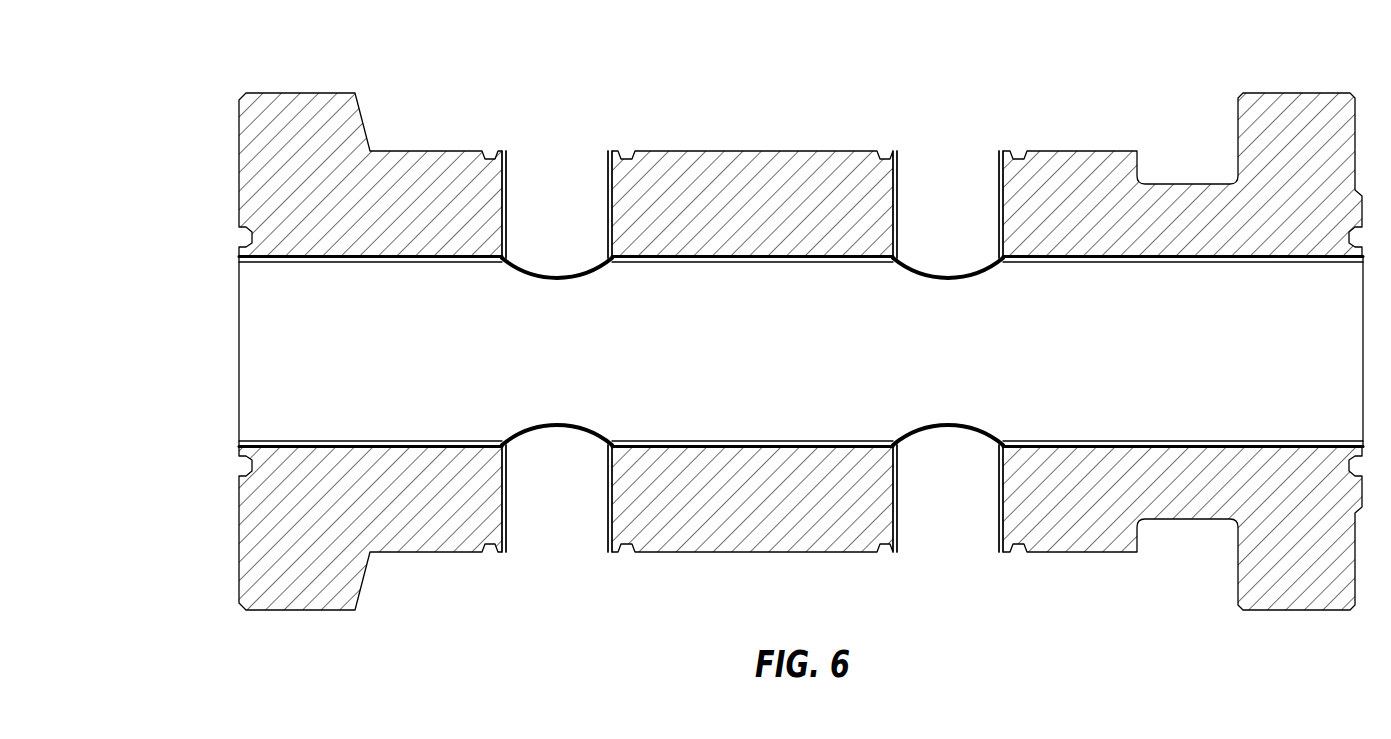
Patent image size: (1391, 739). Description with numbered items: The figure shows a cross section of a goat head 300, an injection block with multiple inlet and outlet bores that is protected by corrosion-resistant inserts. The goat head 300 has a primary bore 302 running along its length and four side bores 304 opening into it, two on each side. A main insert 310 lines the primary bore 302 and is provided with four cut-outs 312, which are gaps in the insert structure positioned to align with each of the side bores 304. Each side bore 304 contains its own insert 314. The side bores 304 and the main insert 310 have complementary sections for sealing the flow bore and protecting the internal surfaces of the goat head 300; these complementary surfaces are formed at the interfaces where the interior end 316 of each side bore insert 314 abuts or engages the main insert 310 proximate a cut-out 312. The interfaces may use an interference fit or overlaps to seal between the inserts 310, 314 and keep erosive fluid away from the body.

The goat head 300 is at (212, 217).
The primary bore 302 is at (272, 347).
The side bores 304 is at (572, 172).
The main insert 310 is at (243, 445).
The cut-outs 312 is at (543, 267).
The insert 314 is at (614, 151).
The interior end 316 is at (568, 278).